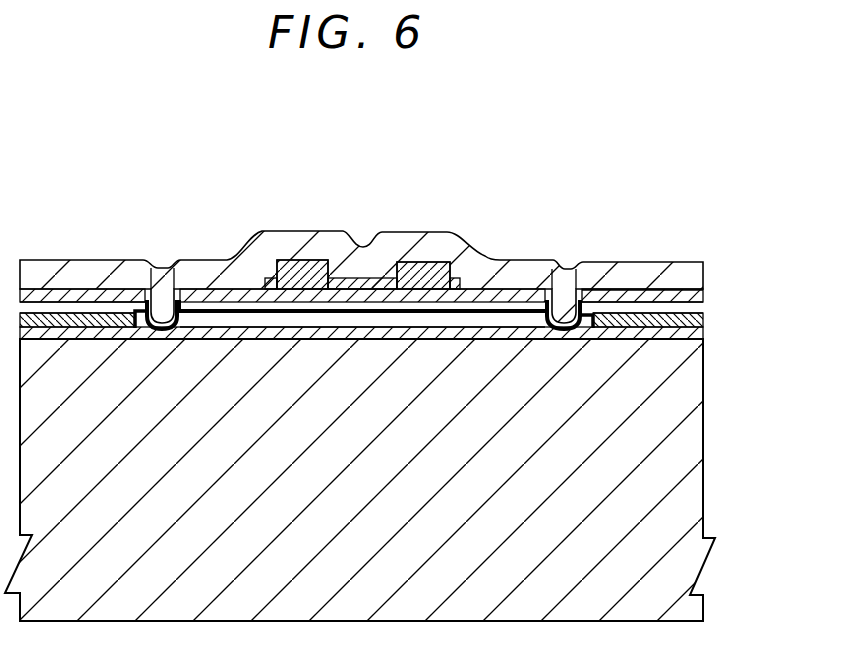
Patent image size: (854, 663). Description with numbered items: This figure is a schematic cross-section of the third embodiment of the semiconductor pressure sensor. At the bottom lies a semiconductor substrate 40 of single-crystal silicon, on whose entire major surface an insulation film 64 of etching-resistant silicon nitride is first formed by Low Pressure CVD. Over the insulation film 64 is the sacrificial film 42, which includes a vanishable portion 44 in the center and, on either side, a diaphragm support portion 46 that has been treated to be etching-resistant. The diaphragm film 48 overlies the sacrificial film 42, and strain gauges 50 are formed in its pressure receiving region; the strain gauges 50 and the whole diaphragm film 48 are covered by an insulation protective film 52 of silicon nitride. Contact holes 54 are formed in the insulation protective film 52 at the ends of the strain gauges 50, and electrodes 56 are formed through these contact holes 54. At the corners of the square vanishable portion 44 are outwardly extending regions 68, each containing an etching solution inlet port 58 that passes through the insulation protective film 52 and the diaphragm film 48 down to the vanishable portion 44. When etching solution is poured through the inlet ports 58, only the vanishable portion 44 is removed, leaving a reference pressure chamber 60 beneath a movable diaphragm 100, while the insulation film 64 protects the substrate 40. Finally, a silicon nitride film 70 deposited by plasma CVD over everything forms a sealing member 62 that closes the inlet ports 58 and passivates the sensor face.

The semiconductor substrate 40 is at (683, 487).
The sacrificial film 42 is at (705, 318).
The vanishable portion 44 is at (474, 320).
The diaphragm support portion 46 is at (80, 330).
The diaphragm film 48 is at (704, 298).
The strain gauges 50 is at (357, 286).
The insulation protective film 52 is at (704, 290).
The contact holes 54 is at (418, 278).
The electrodes 56 is at (440, 273).
The etching solution inlet port 58 is at (183, 330).
The reference pressure chamber 60 is at (388, 318).
The sealing member 62 is at (163, 268).
The insulation film 64 is at (705, 338).
The extending regions 68 is at (147, 326).
The silicon nitride film 70 is at (272, 248).
The movable diaphragm 100 is at (322, 310).